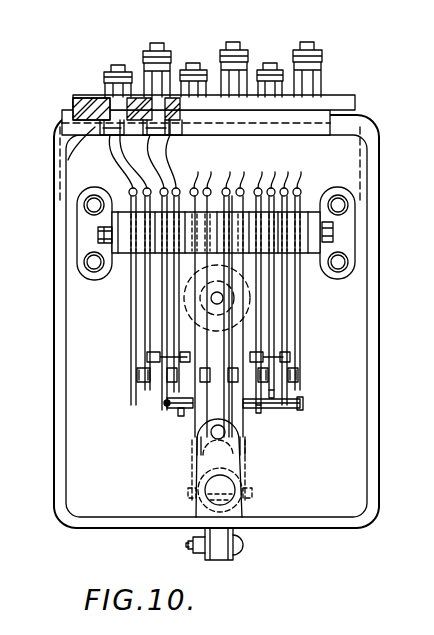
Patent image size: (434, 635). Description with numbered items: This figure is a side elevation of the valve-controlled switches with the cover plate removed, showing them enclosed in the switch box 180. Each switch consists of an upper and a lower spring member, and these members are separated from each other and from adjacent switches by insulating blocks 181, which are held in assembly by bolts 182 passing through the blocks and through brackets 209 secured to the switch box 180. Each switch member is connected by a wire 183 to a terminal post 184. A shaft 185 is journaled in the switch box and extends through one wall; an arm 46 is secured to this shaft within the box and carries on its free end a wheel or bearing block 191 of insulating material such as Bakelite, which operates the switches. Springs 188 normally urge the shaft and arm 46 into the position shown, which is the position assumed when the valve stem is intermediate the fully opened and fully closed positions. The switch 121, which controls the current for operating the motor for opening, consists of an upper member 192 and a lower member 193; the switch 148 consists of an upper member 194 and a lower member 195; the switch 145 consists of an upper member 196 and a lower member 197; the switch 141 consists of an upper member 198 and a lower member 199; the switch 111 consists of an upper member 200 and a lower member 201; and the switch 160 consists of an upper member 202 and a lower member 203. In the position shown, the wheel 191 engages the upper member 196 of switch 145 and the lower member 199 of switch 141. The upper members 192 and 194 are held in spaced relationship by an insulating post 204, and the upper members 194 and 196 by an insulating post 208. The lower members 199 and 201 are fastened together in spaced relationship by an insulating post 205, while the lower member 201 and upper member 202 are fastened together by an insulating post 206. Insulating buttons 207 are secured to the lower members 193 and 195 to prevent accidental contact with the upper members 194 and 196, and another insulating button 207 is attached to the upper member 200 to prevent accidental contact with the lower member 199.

The arm 46 is at (232, 462).
The switch 111 is at (177, 388).
The switch 121 is at (298, 372).
The switch 141 is at (168, 404).
The switch 145 is at (259, 410).
The switch 148 is at (303, 403).
The switch 160 is at (145, 390).
The switch box 180 is at (54, 322).
The insulating blocks 181 is at (308, 243).
The bolts 182 is at (100, 234).
The wire 183 is at (180, 152).
The terminal post 184 is at (232, 44).
The shaft 185 is at (213, 488).
The springs 188 is at (208, 562).
The wheel or bearing block 191 is at (206, 430).
The upper member 192 is at (298, 297).
The lower member 193 is at (285, 310).
The upper member 194 is at (272, 327).
The lower member 195 is at (262, 343).
The upper member 196 is at (243, 423).
The lower member 197 is at (255, 358).
The upper member 198 is at (150, 357).
The lower member 199 is at (198, 422).
The upper member 200 is at (213, 337).
The lower member 201 is at (165, 322).
The upper member 202 is at (150, 310).
The lower member 203 is at (138, 297).
The insulating post 204 is at (290, 409).
The insulating post 205 is at (180, 412).
The insulating post 206 is at (140, 375).
The insulating buttons 207 is at (268, 370).
The insulating post 208 is at (272, 422).
The brackets 209 is at (80, 265).